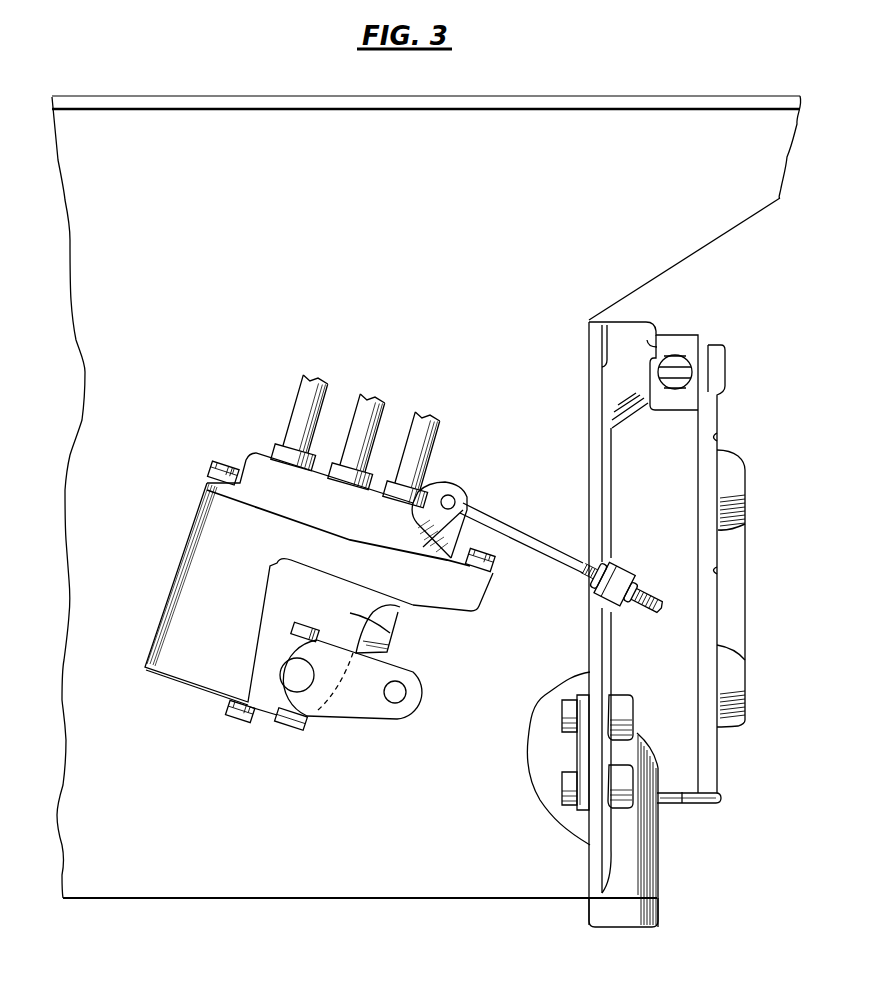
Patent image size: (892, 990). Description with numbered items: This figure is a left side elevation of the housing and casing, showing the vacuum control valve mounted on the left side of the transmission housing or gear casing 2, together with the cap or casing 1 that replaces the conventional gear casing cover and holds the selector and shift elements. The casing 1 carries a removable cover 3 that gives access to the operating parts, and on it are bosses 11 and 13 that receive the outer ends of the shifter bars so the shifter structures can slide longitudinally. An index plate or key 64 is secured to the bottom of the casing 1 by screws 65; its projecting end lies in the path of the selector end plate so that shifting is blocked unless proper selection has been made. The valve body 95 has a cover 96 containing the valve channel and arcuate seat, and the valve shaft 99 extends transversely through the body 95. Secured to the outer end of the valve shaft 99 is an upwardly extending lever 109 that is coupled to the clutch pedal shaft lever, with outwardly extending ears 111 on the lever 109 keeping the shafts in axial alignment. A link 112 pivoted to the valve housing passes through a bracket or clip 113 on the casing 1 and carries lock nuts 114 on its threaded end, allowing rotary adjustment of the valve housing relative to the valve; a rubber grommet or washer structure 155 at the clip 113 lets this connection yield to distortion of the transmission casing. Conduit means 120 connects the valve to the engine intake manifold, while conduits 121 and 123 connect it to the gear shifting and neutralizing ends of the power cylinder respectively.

The casing 1 is at (682, 782).
The gear casing 2 is at (470, 877).
The cover 3 is at (710, 757).
The boss 11 is at (640, 916).
The boss 13 is at (640, 882).
The index plate 64 is at (580, 757).
The screws 65 is at (565, 716).
The valve body 95 is at (422, 590).
The cover 96 is at (466, 507).
The valve shaft 99 is at (297, 677).
The lever 109 is at (368, 700).
The ears 111 is at (312, 626).
The link 112 is at (549, 548).
The clip 113 is at (612, 612).
The lock nuts 114 is at (640, 590).
The conduit means 120 is at (390, 380).
The conduit 121 is at (455, 398).
The conduit 123 is at (303, 390).
The rubber grommet 155 is at (628, 568).